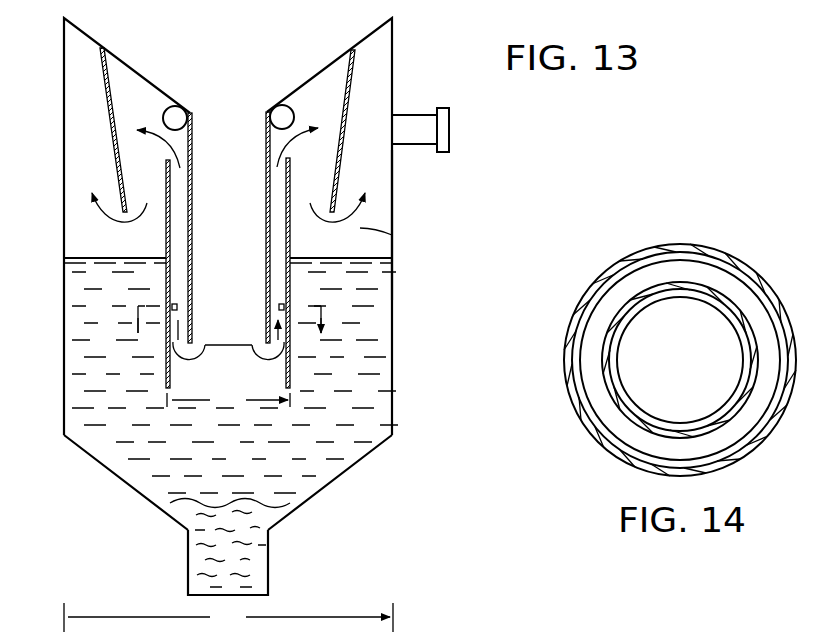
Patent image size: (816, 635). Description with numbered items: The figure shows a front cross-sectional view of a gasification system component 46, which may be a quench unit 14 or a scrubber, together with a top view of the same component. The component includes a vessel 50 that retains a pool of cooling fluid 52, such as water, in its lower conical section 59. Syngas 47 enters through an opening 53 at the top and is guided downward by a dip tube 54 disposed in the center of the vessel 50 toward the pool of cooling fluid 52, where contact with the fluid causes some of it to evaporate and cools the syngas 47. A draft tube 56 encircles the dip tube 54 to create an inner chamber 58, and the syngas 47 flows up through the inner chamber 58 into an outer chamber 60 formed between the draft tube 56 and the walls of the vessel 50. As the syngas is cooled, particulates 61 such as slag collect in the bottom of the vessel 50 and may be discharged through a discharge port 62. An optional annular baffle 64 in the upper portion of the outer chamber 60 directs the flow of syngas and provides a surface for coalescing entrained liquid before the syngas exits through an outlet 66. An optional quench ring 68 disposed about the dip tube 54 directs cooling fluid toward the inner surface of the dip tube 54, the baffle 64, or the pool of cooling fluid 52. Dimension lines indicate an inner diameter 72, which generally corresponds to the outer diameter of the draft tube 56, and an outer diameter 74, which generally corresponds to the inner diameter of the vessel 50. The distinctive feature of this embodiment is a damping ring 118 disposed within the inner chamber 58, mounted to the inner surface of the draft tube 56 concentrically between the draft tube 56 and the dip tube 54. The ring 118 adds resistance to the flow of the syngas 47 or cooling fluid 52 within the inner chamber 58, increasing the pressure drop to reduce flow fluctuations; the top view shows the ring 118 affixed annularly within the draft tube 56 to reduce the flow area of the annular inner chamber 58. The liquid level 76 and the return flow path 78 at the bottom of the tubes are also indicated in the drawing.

In FIG. 13, the quench unit 14 is at (231, 321).
In FIG. 13, the gasification system component 46 is at (415, 33).
In FIG. 13, the syngas 47 is at (231, 135).
In FIG. 13, the vessel 50 is at (393, 200).
In FIG. 13, the cooling fluid 52 is at (78, 422).
In FIG. 13, the opening 53 is at (213, 117).
In FIG. 13, the dip tube 54 is at (192, 230).
In FIG. 14, the dip tube 54 is at (740, 338).
In FIG. 13, the draft tube 56 is at (165, 237).
In FIG. 14, the draft tube 56 is at (718, 262).
In FIG. 13, the inner chamber 58 is at (268, 205).
In FIG. 14, the inner chamber 58 is at (590, 352).
In FIG. 13, the conical section 59 is at (342, 472).
In FIG. 13, the outer chamber 60 is at (380, 237).
In FIG. 13, the particulates 61 is at (188, 556).
In FIG. 13, the discharge port 62 is at (268, 560).
In FIG. 13, the annular baffle 64 is at (348, 98).
In FIG. 13, the outlet 66 is at (441, 108).
In FIG. 13, the quench ring 68 is at (288, 107).
In FIG. 13, the inner diameter 72 is at (228, 400).
In FIG. 13, the outer diameter 74 is at (228, 617).
In FIG. 13, the liquid level 76 is at (72, 257).
In FIG. 13, the flow return 78 is at (222, 343).
In FIG. 13, the damping ring 118 is at (284, 307).
In FIG. 14, the damping ring 118 is at (643, 262).